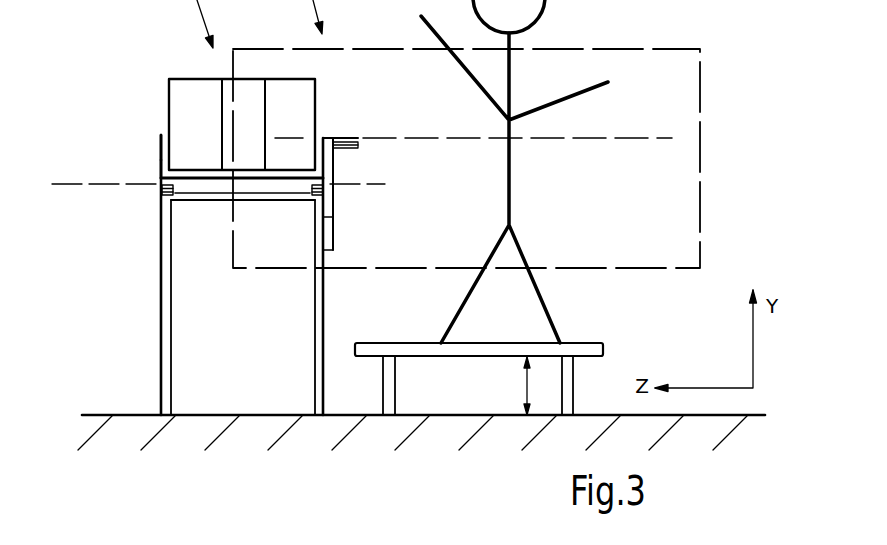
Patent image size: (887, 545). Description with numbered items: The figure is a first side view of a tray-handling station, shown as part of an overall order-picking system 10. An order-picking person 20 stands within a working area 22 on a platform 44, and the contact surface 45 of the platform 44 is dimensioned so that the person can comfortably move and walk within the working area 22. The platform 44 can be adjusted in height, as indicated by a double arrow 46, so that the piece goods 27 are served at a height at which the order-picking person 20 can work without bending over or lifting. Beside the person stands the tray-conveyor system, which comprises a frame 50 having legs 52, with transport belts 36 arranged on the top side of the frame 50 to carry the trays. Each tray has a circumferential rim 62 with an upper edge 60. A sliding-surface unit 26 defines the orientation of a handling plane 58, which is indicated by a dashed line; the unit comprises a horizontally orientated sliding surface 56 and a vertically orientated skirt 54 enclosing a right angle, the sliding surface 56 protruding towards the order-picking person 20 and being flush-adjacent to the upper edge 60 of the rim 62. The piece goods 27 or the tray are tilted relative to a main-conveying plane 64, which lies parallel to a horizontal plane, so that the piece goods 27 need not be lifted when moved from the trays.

The measuring system 10 is at (239, 537).
The order-picking person 20 is at (511, 190).
The working area 22 is at (669, 45).
The sliding-surface unit 26 is at (338, 195).
The piece goods 27 is at (181, 116).
The belts 36 is at (317, 187).
The platform 44 is at (403, 372).
The contact surface 45 is at (405, 342).
The double arrow 46 is at (525, 382).
The frame 50 is at (152, 267).
The legs 52 is at (161, 342).
The skirt 54 is at (335, 234).
The sliding surface 56 is at (351, 151).
The handling plane 58 is at (645, 140).
The upper edge 60 is at (158, 122).
The circumferential rim 62 is at (160, 163).
The main-conveying plane 64 is at (70, 182).